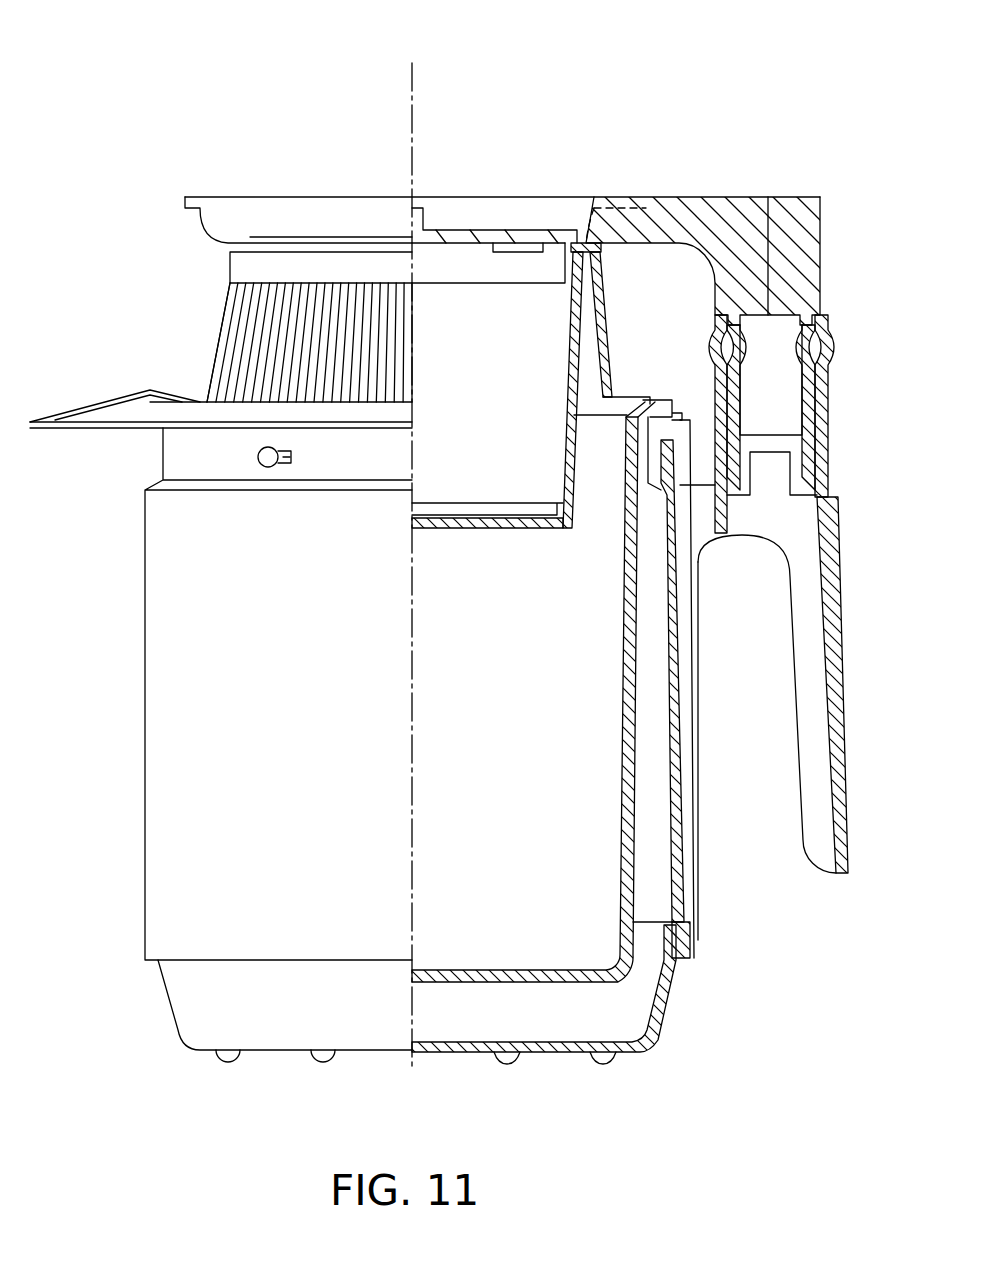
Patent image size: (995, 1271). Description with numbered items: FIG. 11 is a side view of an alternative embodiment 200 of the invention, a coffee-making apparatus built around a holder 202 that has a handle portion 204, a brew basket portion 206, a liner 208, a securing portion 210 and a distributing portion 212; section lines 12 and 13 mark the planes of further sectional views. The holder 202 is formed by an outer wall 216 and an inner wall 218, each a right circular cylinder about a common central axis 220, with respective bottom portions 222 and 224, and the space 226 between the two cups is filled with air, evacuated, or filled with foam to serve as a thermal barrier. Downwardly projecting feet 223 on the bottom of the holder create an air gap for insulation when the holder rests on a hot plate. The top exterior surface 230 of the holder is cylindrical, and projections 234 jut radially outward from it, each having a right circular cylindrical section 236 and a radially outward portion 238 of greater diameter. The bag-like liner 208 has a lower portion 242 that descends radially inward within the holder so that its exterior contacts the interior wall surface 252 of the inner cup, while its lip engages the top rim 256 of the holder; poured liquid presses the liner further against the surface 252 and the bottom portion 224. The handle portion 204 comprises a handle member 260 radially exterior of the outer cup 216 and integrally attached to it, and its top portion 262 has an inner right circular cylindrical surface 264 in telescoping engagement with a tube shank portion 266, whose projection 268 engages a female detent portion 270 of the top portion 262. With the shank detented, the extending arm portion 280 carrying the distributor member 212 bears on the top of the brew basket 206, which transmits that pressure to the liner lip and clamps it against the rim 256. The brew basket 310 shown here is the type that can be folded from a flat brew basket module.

The section line 12- 12 is at (98, 95).
The section line 13- 13 is at (916, 27).
The alternative embodiment 200 is at (152, 748).
The holder 202 is at (160, 858).
The handle portion 204 is at (842, 728).
The brew basket portion 206 is at (226, 300).
The liner portion 208 is at (628, 622).
The securing portion 210 is at (724, 216).
The distributing portion 212 is at (480, 232).
The outer wall 216 is at (680, 915).
The inner wall 218 is at (670, 850).
The central axis 220 is at (420, 103).
The bottom portion of outer wall 222 is at (445, 1052).
The feet 223 is at (606, 1062).
The bottom portion of inner wall 224 is at (487, 970).
The space 226 is at (662, 727).
The top exterior surface 230 is at (163, 457).
The projections 234 is at (292, 464).
The right circular cylindrical section 236 is at (292, 453).
The radially outward portion 238 is at (262, 470).
The lower portion of liner 242 is at (630, 720).
The interior wall surface 252 is at (640, 673).
The top rim 256 is at (537, 450).
The handle member 260 is at (822, 580).
The top portion of handle 262 is at (822, 427).
The inner right circular cylindrical surface 264 is at (808, 386).
The tube shank portion 266 is at (806, 420).
The projection 268 is at (822, 330).
The female detent portion 270 is at (832, 350).
The extending arm portion 280 is at (773, 200).
The brew basket 310 is at (578, 243).